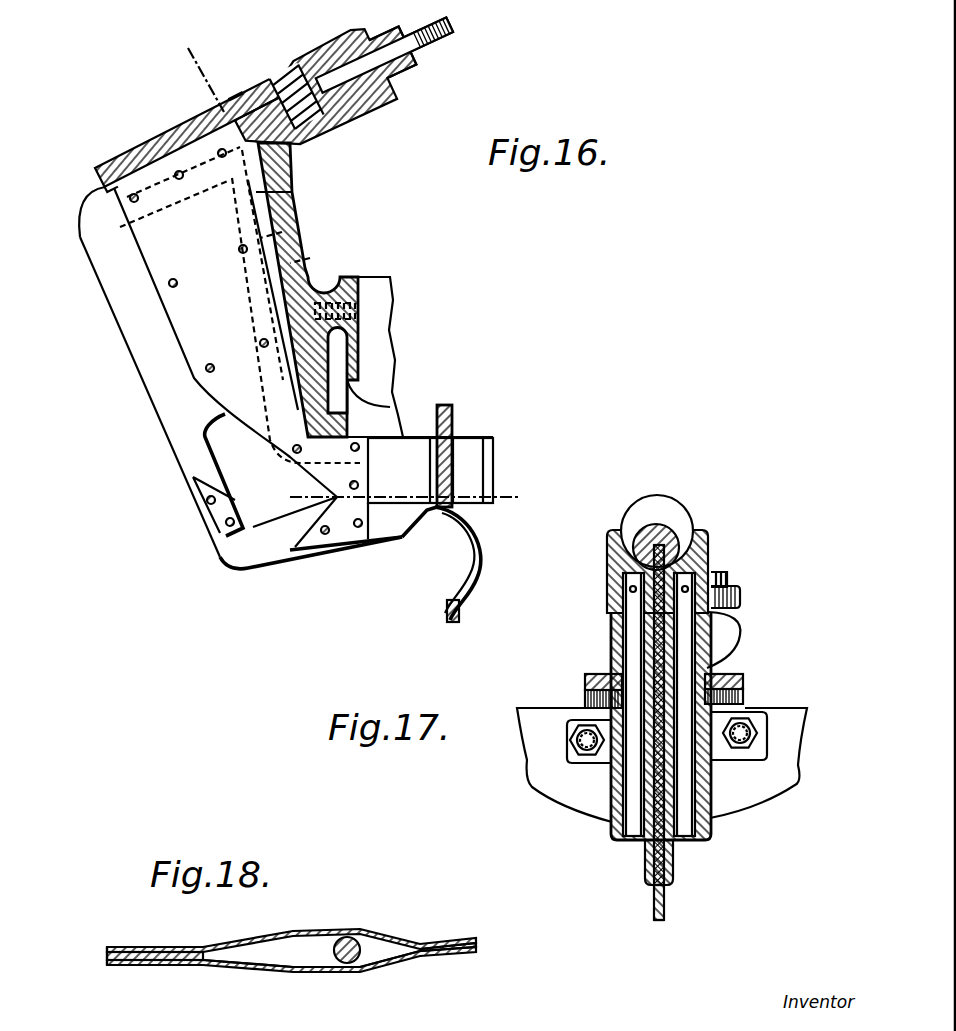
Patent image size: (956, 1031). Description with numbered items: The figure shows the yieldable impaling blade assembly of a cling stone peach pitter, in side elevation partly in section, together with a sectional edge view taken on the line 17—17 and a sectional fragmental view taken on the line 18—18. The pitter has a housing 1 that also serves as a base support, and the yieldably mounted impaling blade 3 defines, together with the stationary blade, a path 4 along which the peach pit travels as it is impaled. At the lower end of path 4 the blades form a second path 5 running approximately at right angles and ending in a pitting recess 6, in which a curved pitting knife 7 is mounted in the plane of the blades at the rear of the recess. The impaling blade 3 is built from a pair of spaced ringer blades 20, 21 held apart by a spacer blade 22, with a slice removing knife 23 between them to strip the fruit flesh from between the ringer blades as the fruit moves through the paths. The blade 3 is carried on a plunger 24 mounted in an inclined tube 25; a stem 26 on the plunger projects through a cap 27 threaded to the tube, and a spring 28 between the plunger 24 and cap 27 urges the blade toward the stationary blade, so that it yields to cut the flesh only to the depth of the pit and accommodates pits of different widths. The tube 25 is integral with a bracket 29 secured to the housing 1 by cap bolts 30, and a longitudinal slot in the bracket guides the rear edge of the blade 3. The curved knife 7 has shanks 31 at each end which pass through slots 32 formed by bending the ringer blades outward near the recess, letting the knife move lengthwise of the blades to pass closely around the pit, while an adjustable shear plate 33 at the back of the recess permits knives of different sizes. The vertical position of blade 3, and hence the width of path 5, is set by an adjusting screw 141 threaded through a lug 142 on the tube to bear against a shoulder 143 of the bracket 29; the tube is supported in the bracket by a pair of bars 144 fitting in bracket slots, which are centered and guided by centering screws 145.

In FIG. 16, the housing 1 is at (365, 346).
In FIG. 17, the housing 1 is at (550, 787).
In FIG. 16, the yieldably mounted impaling blade 3 is at (90, 221).
In FIG. 17, the yieldably mounted impaling blade 3 is at (651, 904).
In FIG. 18, the yieldably mounted impaling blade 3 is at (110, 946).
In FIG. 16, the path 4 is at (122, 349).
In FIG. 16, the second path 5 is at (284, 574).
In FIG. 16, the pitting recess 6 is at (426, 527).
In FIG. 16, the curved pitting knife 7 is at (480, 561).
In FIG. 16, the section line 17- 17 is at (199, 77).
In FIG. 16, the section line 18- 18 is at (298, 482).
In FIG. 16, the ringer blade 20 is at (152, 378).
In FIG. 17, the ringer blade 20 is at (659, 912).
In FIG. 18, the ringer blade 20 is at (140, 947).
In FIG. 17, the ringer blade 21 is at (672, 905).
In FIG. 18, the ringer blade 21 is at (140, 971).
In FIG. 16, the spacer blade 22 is at (184, 304).
In FIG. 17, the spacer blade 22 is at (681, 871).
In FIG. 18, the spacer blade 22 is at (115, 968).
In FIG. 16, the slice removing knife 23 is at (203, 486).
In FIG. 16, the plunger 24 is at (142, 163).
In FIG. 17, the plunger 24 is at (676, 548).
In FIG. 16, the tube 25 is at (235, 97).
In FIG. 17, the tube 25 is at (664, 522).
In FIG. 16, the stem 26 is at (336, 88).
In FIG. 17, the stem 26 is at (624, 543).
In FIG. 16, the cap 27 is at (389, 98).
In FIG. 16, the spring 28 is at (317, 127).
In FIG. 16, the bracket 29 is at (299, 209).
In FIG. 17, the bracket 29 is at (620, 778).
In FIG. 16, the cap bolts 30 is at (332, 300).
In FIG. 17, the cap bolts 30 is at (580, 741).
In FIG. 16, the shanks 31 is at (455, 412).
In FIG. 18, the shanks 31 is at (347, 963).
In FIG. 16, the slots 32 is at (465, 456).
In FIG. 18, the slots 32 is at (300, 957).
In FIG. 18, the shear plate 33 is at (461, 953).
In FIG. 17, the adjusting screw 141 is at (724, 577).
In FIG. 17, the lug 142 is at (740, 596).
In FIG. 17, the shoulder 143 is at (741, 620).
In FIG. 16, the bars 144 is at (282, 232).
In FIG. 17, the bars 144 is at (633, 643).
In FIG. 16, the centering screws 145 is at (310, 258).
In FIG. 17, the centering screws 145 is at (586, 700).